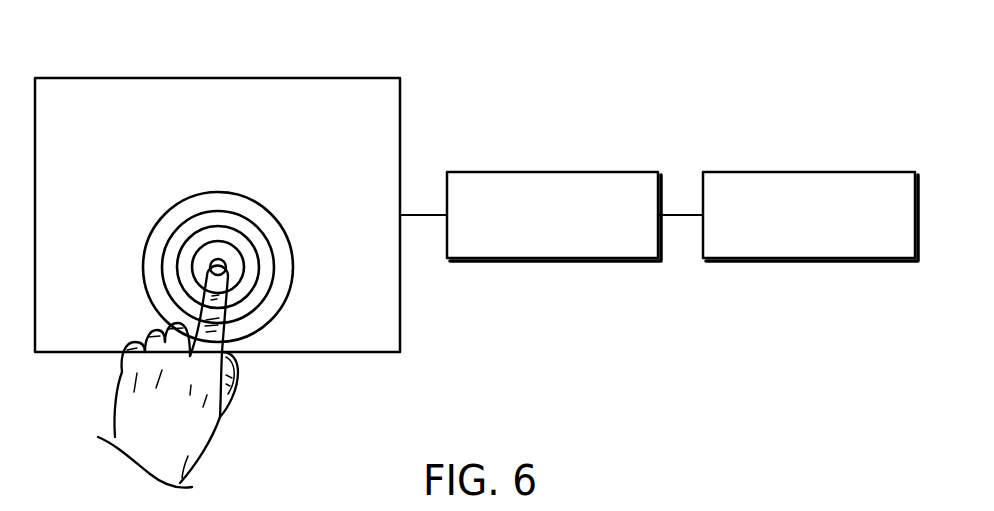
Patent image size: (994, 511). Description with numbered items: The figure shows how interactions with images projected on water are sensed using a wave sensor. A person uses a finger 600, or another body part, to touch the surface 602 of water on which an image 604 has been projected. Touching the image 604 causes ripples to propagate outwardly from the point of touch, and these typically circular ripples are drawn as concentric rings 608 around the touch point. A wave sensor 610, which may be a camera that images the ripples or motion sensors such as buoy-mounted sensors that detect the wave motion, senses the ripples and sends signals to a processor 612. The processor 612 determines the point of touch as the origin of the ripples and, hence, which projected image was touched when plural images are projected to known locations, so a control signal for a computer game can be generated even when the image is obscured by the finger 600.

The finger 600 is at (115, 410).
The surface 602 is at (225, 105).
The image 604 is at (208, 263).
The propagating waves 608 is at (252, 328).
The wave sensor 610 is at (553, 172).
The processor 612 is at (808, 172).